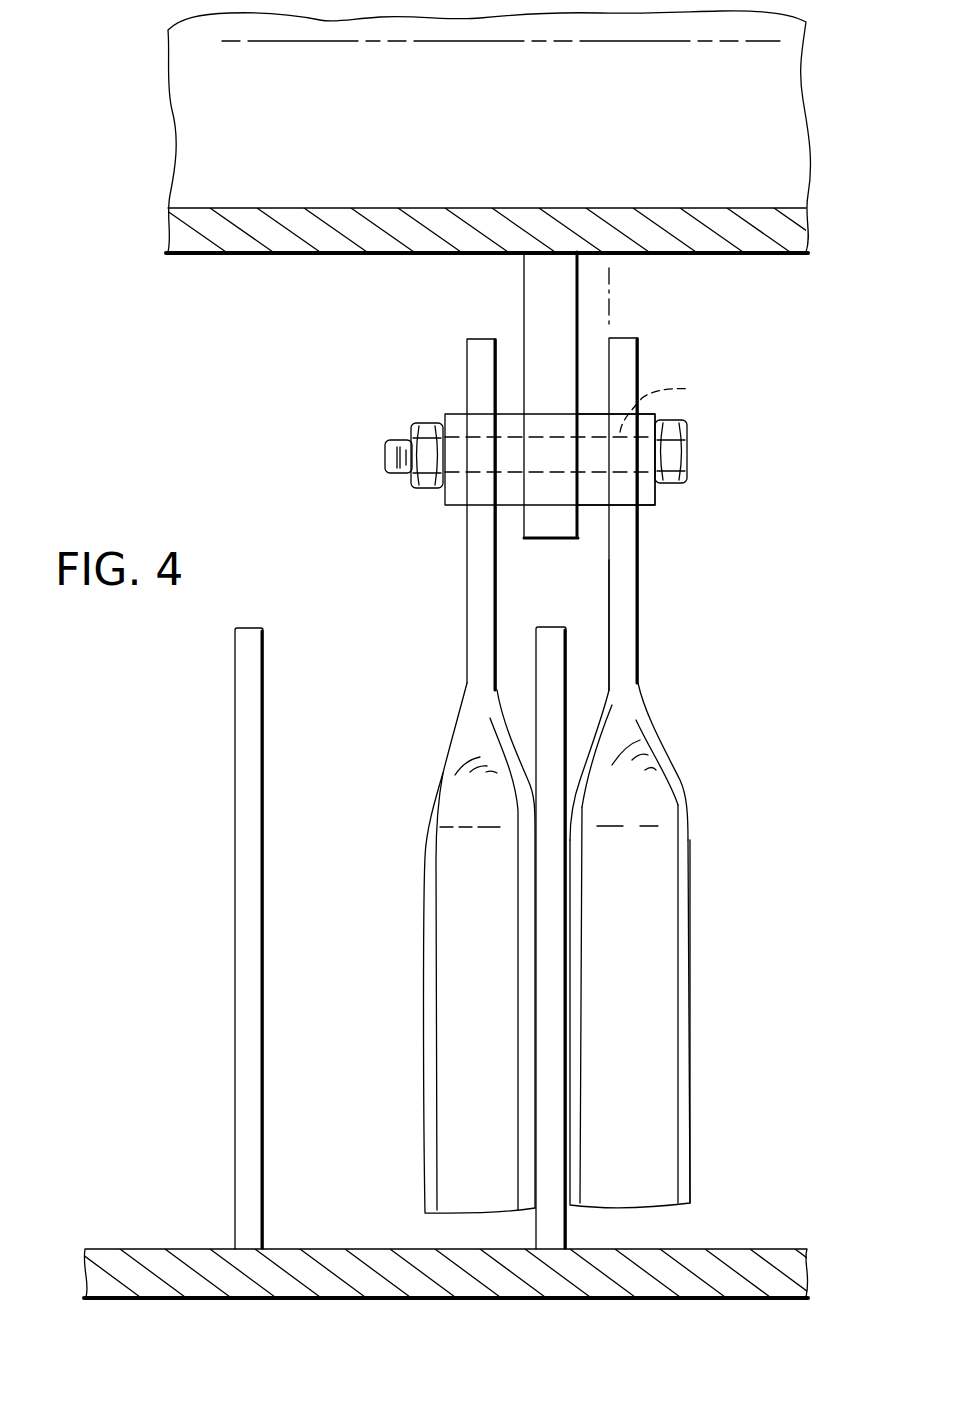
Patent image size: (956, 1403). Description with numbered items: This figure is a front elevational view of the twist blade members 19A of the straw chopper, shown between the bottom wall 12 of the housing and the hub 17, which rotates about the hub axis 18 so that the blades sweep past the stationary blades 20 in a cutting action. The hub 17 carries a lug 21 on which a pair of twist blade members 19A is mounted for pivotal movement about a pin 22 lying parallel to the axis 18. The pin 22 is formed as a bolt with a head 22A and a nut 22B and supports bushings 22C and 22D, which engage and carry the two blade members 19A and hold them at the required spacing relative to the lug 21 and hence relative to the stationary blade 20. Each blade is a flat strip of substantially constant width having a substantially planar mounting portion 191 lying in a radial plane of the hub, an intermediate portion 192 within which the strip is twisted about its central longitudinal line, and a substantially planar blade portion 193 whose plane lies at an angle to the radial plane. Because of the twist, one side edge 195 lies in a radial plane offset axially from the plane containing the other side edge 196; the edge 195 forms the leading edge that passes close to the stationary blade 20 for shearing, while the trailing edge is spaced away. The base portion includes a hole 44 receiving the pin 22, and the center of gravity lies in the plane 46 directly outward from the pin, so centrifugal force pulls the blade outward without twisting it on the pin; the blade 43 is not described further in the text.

The bottom wall 12 is at (150, 1245).
The hub 17 is at (241, 257).
The hub axis 18 is at (618, 40).
The twist blade members 19A is at (683, 876).
The stationary blades 20 is at (234, 734).
The lug 21 is at (547, 277).
The pin 22 is at (390, 440).
The head 22A is at (670, 452).
The nut 22B is at (427, 423).
The bushing 22C is at (510, 495).
The bushing 22D is at (594, 495).
The arm plate 43 is at (637, 373).
The hole 44 is at (669, 406).
The plane 46 is at (613, 303).
The mounting portion 191 is at (628, 588).
The intermediate portion 192 is at (618, 695).
The blade portion 193 is at (660, 947).
The side edge 195 is at (585, 923).
The side edge 196 is at (690, 1030).